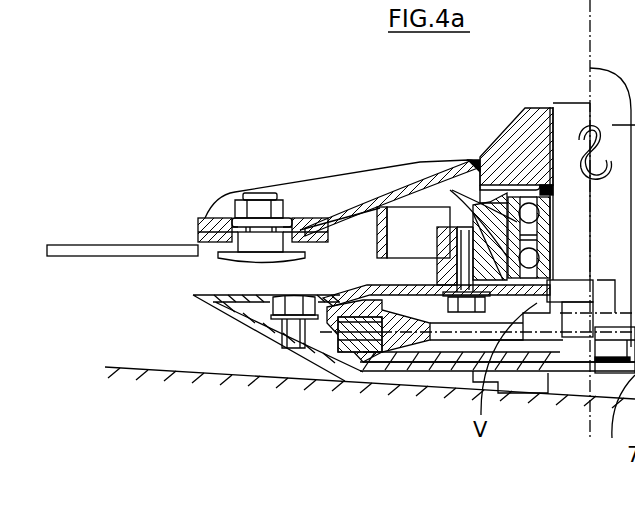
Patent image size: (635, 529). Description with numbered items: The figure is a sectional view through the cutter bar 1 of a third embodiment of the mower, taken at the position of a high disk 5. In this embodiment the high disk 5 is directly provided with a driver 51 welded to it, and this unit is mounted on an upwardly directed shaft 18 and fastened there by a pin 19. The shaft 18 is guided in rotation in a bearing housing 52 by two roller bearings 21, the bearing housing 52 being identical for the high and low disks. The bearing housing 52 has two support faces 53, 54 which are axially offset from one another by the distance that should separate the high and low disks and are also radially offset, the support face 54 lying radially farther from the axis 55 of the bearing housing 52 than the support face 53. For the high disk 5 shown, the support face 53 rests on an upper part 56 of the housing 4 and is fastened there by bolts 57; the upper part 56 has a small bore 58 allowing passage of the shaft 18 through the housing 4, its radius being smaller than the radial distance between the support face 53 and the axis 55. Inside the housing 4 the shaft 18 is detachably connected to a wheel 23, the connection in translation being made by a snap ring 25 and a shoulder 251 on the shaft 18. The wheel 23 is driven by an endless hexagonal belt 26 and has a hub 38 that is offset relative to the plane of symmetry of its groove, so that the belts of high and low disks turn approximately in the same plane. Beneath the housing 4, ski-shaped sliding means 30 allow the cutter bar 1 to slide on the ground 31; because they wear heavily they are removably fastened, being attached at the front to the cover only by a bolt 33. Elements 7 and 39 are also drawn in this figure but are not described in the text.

The cutter bar 1 is at (262, 118).
The housing 4 is at (553, 392).
The high disk 5 is at (405, 180).
The bar 7 is at (85, 245).
The shaft 18 is at (560, 117).
The pin 19 is at (600, 143).
The roller bearings 21 is at (475, 229).
The wheel 23 is at (410, 345).
The snap ring 25 is at (562, 322).
The hexagonal belt 26 is at (353, 343).
The sliding means 30 is at (233, 320).
The ground 31 is at (200, 443).
The bolt 33 is at (297, 303).
The hub 38 is at (567, 312).
The cover 39 is at (375, 225).
The driver 51 is at (538, 120).
The bearing housing 52 is at (457, 230).
The support face 53 is at (527, 290).
The support face 54 is at (445, 262).
The axis 55 is at (590, 22).
The upper part 56 is at (358, 295).
The bolts 57 is at (455, 283).
The small bore 58 is at (547, 294).
The shoulder 251 is at (588, 291).